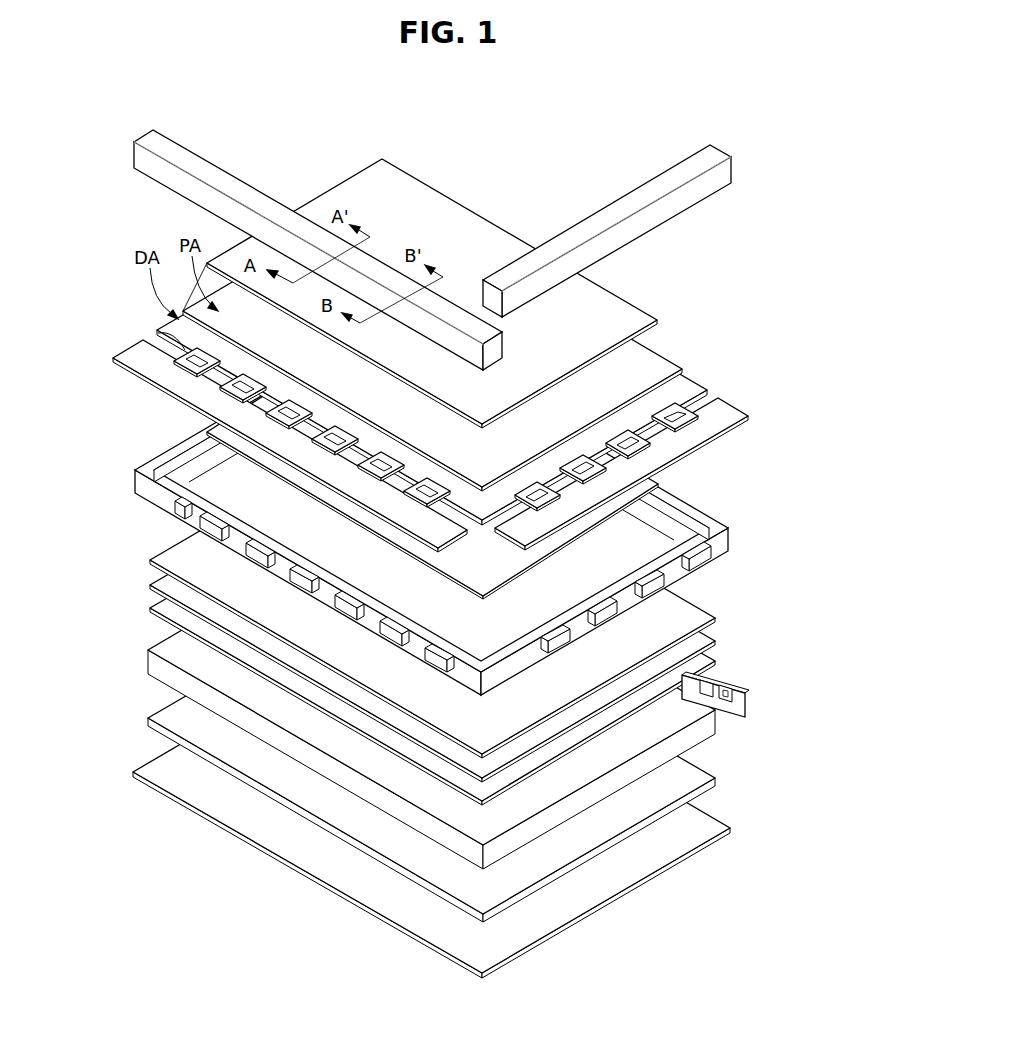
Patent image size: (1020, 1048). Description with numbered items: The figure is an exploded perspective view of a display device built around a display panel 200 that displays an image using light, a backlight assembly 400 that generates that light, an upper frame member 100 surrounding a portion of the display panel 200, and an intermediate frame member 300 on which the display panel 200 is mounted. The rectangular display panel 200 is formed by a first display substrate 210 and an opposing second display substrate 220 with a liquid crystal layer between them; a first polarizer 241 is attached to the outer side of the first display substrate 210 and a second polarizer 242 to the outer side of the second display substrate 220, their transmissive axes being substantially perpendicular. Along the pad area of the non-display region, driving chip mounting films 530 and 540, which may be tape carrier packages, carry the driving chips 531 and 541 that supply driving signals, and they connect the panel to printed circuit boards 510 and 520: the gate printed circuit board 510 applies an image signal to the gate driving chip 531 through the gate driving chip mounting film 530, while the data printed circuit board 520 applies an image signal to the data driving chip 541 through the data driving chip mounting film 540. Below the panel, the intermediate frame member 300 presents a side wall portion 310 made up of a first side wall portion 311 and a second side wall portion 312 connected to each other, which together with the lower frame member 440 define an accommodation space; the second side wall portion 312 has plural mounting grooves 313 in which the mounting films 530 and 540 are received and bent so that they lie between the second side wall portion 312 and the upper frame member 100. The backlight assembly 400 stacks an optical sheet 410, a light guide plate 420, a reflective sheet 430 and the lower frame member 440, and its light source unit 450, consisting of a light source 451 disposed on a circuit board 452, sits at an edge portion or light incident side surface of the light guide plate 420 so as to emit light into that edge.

The upper frame member 100 is at (140, 155).
The display panel 200 is at (478, 359).
The first display substrate 210 is at (683, 378).
The second display substrate 220 is at (655, 347).
The first polarizer 241 is at (660, 483).
The second polarizer 242 is at (625, 305).
The intermediate frame member 300 is at (451, 510).
The side wall portion 310 is at (488, 510).
The first side wall portion 311 is at (703, 512).
The second side wall portion 312 is at (705, 558).
The mounting groove 313 is at (133, 479).
The backlight assembly 400 is at (379, 701).
The optical sheet 410 is at (80, 760).
The light guide plate 420 is at (157, 664).
The reflective sheet 430 is at (168, 713).
The lower frame member 440 is at (165, 760).
The light source unit 450 is at (772, 696).
The light source 451 is at (723, 680).
The circuit board 452 is at (737, 705).
The gate printed circuit board 510 is at (737, 406).
The data printed circuit board 520 is at (128, 350).
The gate driving chip mounting film 530 is at (644, 457).
The gate driving chip 531 is at (688, 417).
The data driving chip mounting film 540 is at (273, 399).
The data driving chip 541 is at (187, 362).